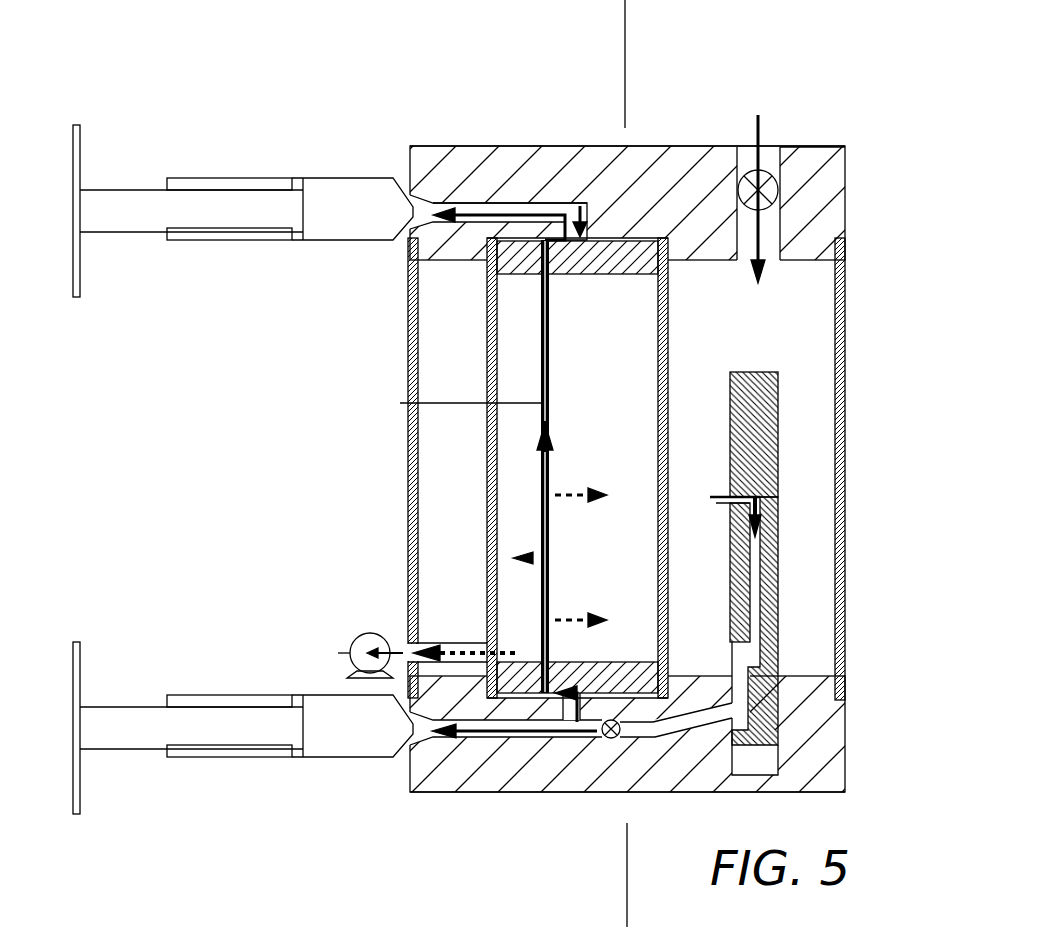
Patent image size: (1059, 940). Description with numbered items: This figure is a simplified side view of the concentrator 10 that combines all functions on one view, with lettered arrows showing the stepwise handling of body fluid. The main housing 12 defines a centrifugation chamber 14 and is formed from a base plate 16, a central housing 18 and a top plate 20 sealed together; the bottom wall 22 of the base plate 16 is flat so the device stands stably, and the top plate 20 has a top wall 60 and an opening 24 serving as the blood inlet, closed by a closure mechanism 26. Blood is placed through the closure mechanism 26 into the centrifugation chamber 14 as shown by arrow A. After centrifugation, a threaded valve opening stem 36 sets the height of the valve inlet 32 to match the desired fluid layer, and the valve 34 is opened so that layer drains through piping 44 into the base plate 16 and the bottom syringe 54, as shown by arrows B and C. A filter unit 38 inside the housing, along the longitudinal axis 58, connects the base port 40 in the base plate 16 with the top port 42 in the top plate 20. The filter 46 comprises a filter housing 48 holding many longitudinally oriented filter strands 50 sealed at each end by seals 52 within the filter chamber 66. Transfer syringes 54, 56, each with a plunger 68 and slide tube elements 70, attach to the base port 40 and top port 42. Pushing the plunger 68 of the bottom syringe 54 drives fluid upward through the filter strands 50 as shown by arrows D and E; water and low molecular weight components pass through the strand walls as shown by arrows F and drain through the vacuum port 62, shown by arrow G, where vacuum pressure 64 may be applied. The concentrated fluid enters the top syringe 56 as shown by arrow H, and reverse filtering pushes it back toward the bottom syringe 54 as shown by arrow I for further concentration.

The concentrator 10 is at (318, 165).
The main housing 12 is at (854, 314).
The centrifugation chamber 14 is at (456, 343).
The base plate 16 is at (600, 775).
The central housing 18 is at (408, 372).
The top plate 20 is at (473, 167).
The bottom wall 22 is at (539, 780).
The opening 24 is at (770, 147).
The closure mechanism 26 is at (747, 146).
The valve inlet 32 is at (718, 501).
The valve 34 is at (612, 740).
The threaded valve opening stem 36 is at (766, 462).
The filter unit 38 is at (487, 455).
The base port 40 is at (408, 738).
The top port 42 is at (410, 238).
The piping 44 is at (756, 628).
The filter 46 is at (402, 403).
The filter housing 48 is at (487, 307).
The filter strands 50 is at (540, 356).
The seals 52 is at (645, 272).
The bottom syringe 54 is at (232, 677).
The top syringe 56 is at (243, 469).
The longitudinal axis 58 is at (626, 53).
The top wall 60 is at (500, 148).
The vacuum port 62 is at (410, 648).
The vacuum pressure 64 is at (343, 641).
The filter chamber 66 is at (626, 339).
The plunger 68 is at (133, 188).
The slide tube elements 70 is at (283, 242).
The arrow A is at (760, 126).
The arrow B is at (722, 497).
The arrow C is at (520, 737).
The arrow D is at (580, 697).
The arrow E is at (541, 607).
The arrows F is at (565, 612).
The arrow G is at (456, 632).
The arrow H is at (515, 216).
The arrow I is at (513, 200).